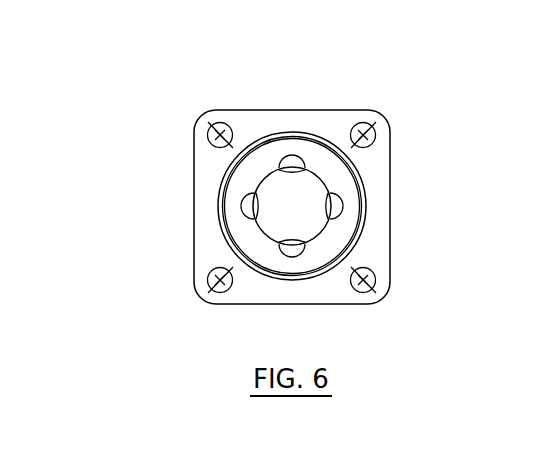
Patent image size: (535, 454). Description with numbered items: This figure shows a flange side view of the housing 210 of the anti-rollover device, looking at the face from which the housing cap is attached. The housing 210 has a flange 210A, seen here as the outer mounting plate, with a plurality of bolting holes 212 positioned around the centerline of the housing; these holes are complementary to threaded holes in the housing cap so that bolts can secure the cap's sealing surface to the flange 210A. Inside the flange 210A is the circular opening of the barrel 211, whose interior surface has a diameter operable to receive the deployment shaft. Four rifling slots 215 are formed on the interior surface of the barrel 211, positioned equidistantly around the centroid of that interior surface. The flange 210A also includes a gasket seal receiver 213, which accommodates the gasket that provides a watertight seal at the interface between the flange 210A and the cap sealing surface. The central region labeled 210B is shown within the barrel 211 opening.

The housing 210 is at (120, 112).
The flange 210A is at (207, 222).
The central body 210B is at (302, 190).
The barrel 211 is at (320, 234).
The bolting holes 212 is at (363, 124).
The gasket seal receiver 213 is at (225, 228).
The rifling slots 215 is at (288, 155).